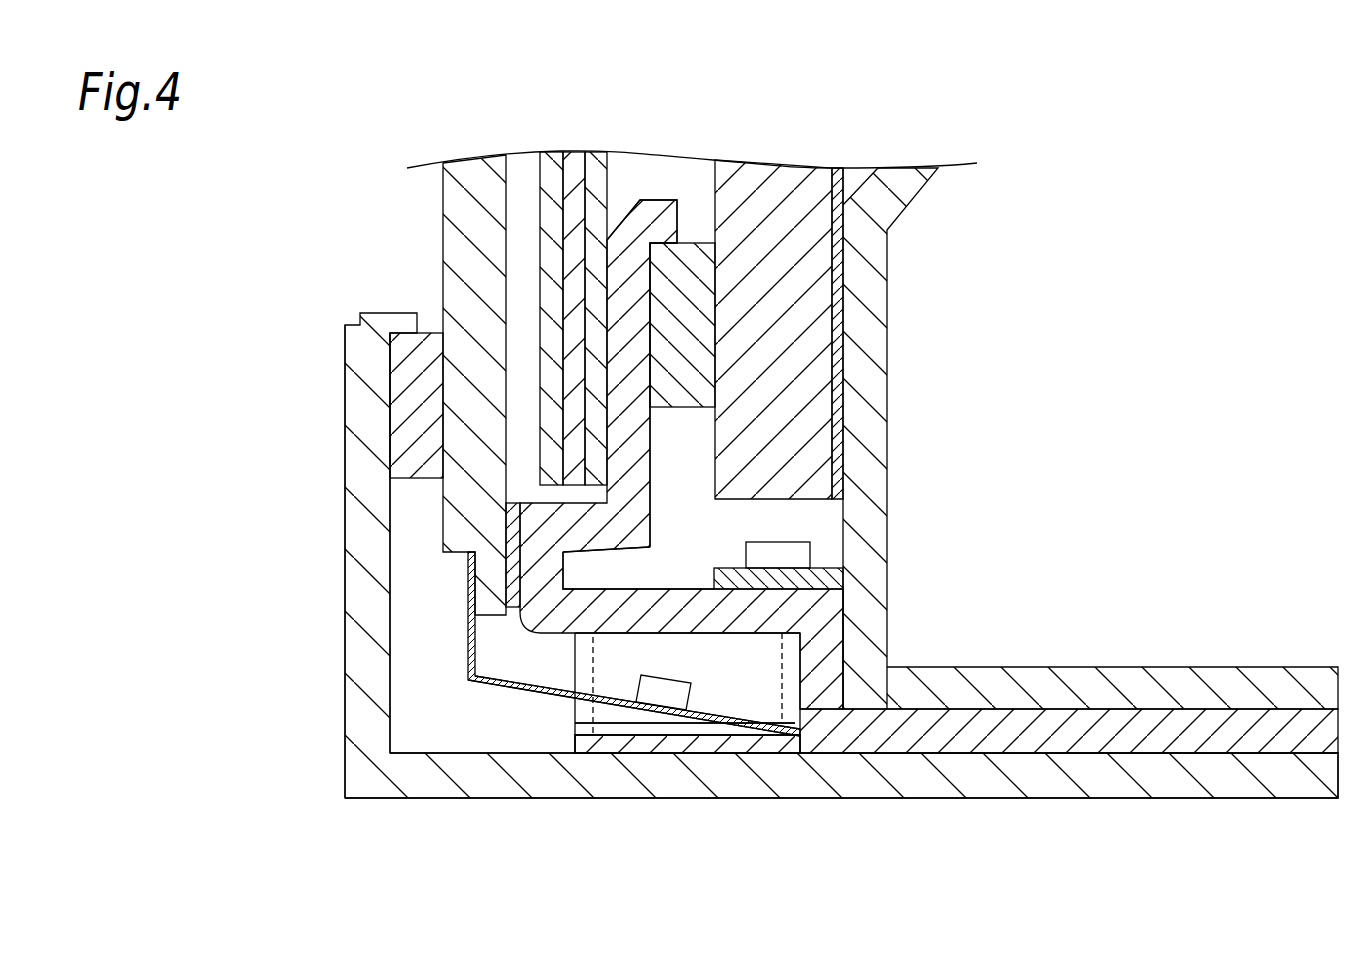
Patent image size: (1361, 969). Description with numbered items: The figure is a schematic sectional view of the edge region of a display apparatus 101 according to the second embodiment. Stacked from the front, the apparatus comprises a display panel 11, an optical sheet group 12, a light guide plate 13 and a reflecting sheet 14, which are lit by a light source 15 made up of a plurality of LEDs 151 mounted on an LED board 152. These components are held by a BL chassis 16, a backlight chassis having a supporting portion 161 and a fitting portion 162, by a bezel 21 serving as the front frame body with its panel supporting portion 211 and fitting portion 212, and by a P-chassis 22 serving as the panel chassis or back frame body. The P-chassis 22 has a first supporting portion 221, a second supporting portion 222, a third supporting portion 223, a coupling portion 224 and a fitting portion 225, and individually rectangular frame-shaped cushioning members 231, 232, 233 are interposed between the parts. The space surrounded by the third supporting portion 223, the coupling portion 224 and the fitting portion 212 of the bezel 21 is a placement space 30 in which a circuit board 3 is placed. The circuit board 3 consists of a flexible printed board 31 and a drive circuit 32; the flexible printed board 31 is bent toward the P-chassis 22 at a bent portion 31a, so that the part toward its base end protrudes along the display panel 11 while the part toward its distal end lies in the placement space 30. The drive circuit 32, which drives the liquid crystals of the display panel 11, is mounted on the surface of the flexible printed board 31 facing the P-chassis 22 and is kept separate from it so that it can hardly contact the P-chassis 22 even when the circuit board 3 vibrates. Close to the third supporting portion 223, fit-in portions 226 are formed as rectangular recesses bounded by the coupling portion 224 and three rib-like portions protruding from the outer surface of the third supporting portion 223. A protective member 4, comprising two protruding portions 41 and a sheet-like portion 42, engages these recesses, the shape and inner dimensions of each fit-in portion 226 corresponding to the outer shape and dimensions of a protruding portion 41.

The display apparatus 101 is at (273, 264).
The display panel 11 is at (457, 197).
The optical sheet group 12 is at (550, 173).
The light guide plate 13 is at (773, 197).
The reflecting sheet 14 is at (838, 173).
The light source 15 is at (880, 550).
The LED 151 is at (810, 550).
The LED board 152 is at (832, 578).
The BL chassis 16 is at (1090, 438).
The supporting portion 161 is at (867, 430).
The fitting portion 162 is at (1167, 677).
The bezel 21 is at (754, 585).
The panel supporting portion 211 is at (362, 702).
The fitting portion 212 is at (432, 787).
The P-chassis 22 is at (889, 562).
The first supporting portion 221 is at (565, 570).
The second supporting portion 222 is at (643, 443).
The third supporting portion 223 is at (740, 627).
The coupling portion 224 is at (838, 648).
The fitting portion 225 is at (1133, 743).
The fit-in portion 226 is at (636, 730).
The cushioning member 231 is at (433, 345).
The cushioning member 232 is at (510, 625).
The cushioning member 233 is at (697, 257).
The circuit board 3 is at (522, 725).
The placement space 30 is at (748, 692).
The flexible printed board 31 is at (522, 644).
The bent portion 31a is at (472, 650).
The drive circuit 32 is at (667, 697).
The protective member 4 is at (655, 825).
The protruding portion 41 is at (612, 727).
The sheet-like portion 42 is at (597, 745).